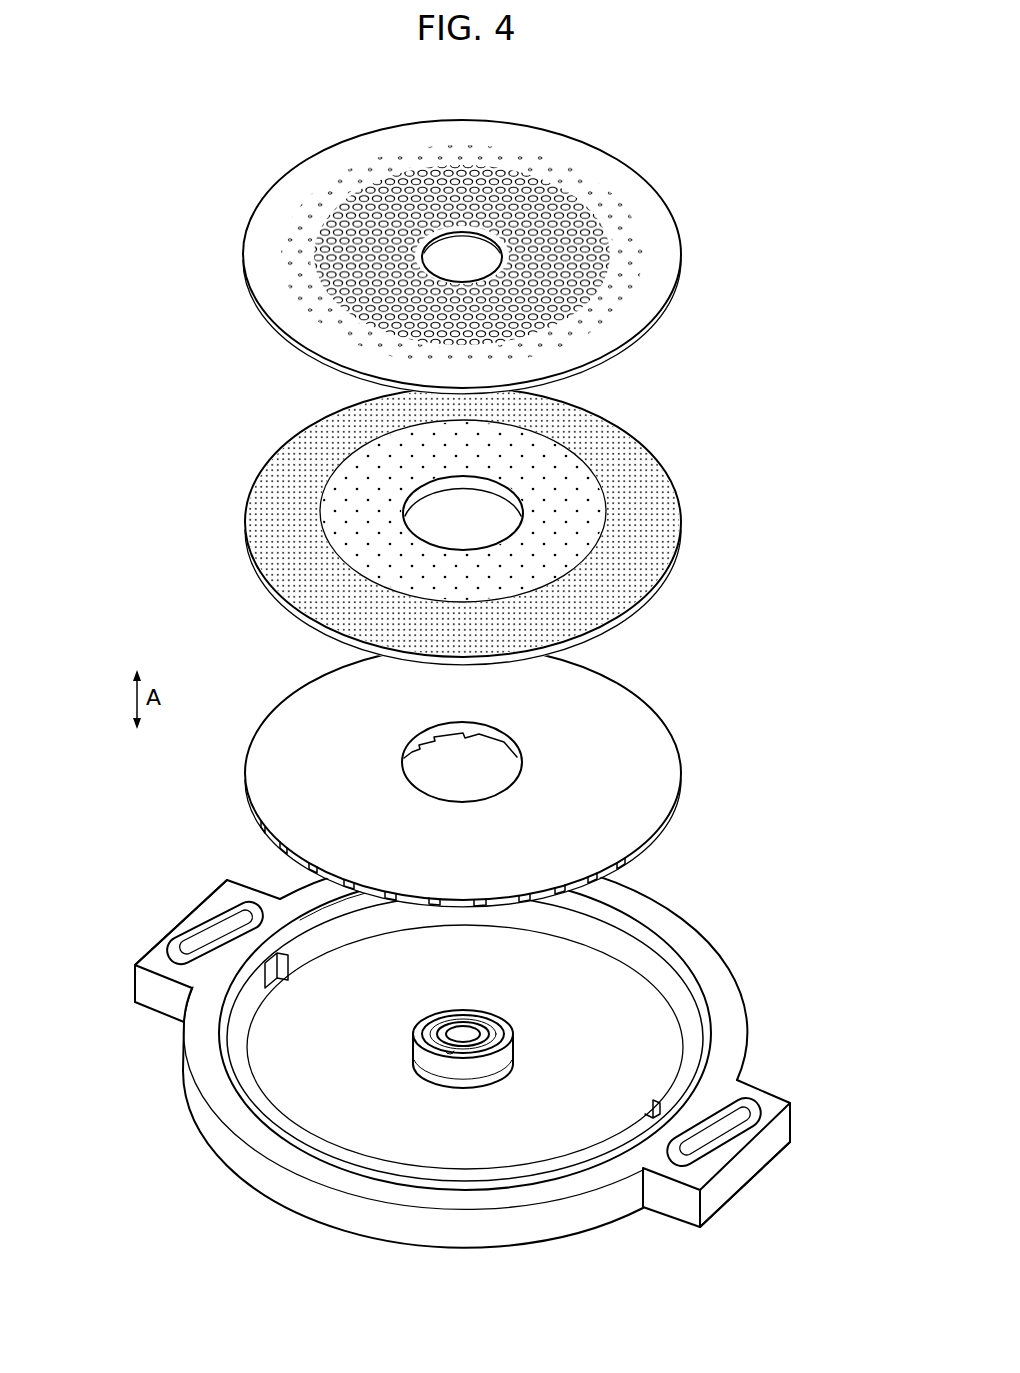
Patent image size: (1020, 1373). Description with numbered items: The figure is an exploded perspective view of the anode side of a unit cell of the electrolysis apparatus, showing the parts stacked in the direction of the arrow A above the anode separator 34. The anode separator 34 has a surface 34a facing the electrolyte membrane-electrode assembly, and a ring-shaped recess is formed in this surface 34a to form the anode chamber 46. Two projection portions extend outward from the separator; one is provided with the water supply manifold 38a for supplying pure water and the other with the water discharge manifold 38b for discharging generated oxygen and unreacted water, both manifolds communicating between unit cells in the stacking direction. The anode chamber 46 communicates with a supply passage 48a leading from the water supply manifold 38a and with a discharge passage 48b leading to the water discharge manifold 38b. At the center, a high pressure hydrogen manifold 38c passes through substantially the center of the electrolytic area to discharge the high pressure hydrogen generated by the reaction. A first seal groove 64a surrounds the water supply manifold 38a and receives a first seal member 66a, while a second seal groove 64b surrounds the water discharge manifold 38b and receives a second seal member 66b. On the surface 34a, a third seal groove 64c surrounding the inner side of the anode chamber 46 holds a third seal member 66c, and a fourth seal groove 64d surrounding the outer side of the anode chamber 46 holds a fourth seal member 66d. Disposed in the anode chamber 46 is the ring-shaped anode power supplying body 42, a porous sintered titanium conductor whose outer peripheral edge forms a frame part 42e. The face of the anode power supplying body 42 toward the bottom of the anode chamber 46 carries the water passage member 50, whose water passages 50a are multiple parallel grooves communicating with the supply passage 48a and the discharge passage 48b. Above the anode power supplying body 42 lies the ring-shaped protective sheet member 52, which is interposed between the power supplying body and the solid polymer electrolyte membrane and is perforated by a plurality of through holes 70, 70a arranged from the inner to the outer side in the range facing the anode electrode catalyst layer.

The anode separator 34 is at (708, 946).
The surface of the anode separator 34a is at (659, 914).
The water supply manifold 38a is at (206, 943).
The water discharge manifold 38b is at (694, 1156).
The high pressure hydrogen manifold 38c is at (469, 1036).
The anode power supplying body 42 is at (611, 408).
The frame part 42e is at (648, 462).
The anode chamber 46 is at (350, 1116).
The supply passage 48a is at (289, 971).
The discharge passage 48b is at (650, 1106).
The water passage member 50 is at (686, 746).
The water passages 50a is at (668, 840).
The protective sheet member 52 is at (654, 184).
The first seal groove 64a is at (222, 906).
The second seal groove 64b is at (697, 1127).
The third seal groove 64c is at (454, 1058).
The fourth seal groove 64d is at (227, 995).
The first seal member 66a is at (239, 903).
The second seal member 66b is at (750, 1107).
The third seal member 66c is at (452, 1022).
The fourth seal member 66d is at (354, 905).
The through holes 70 is at (539, 207).
The through holes 70a is at (312, 222).